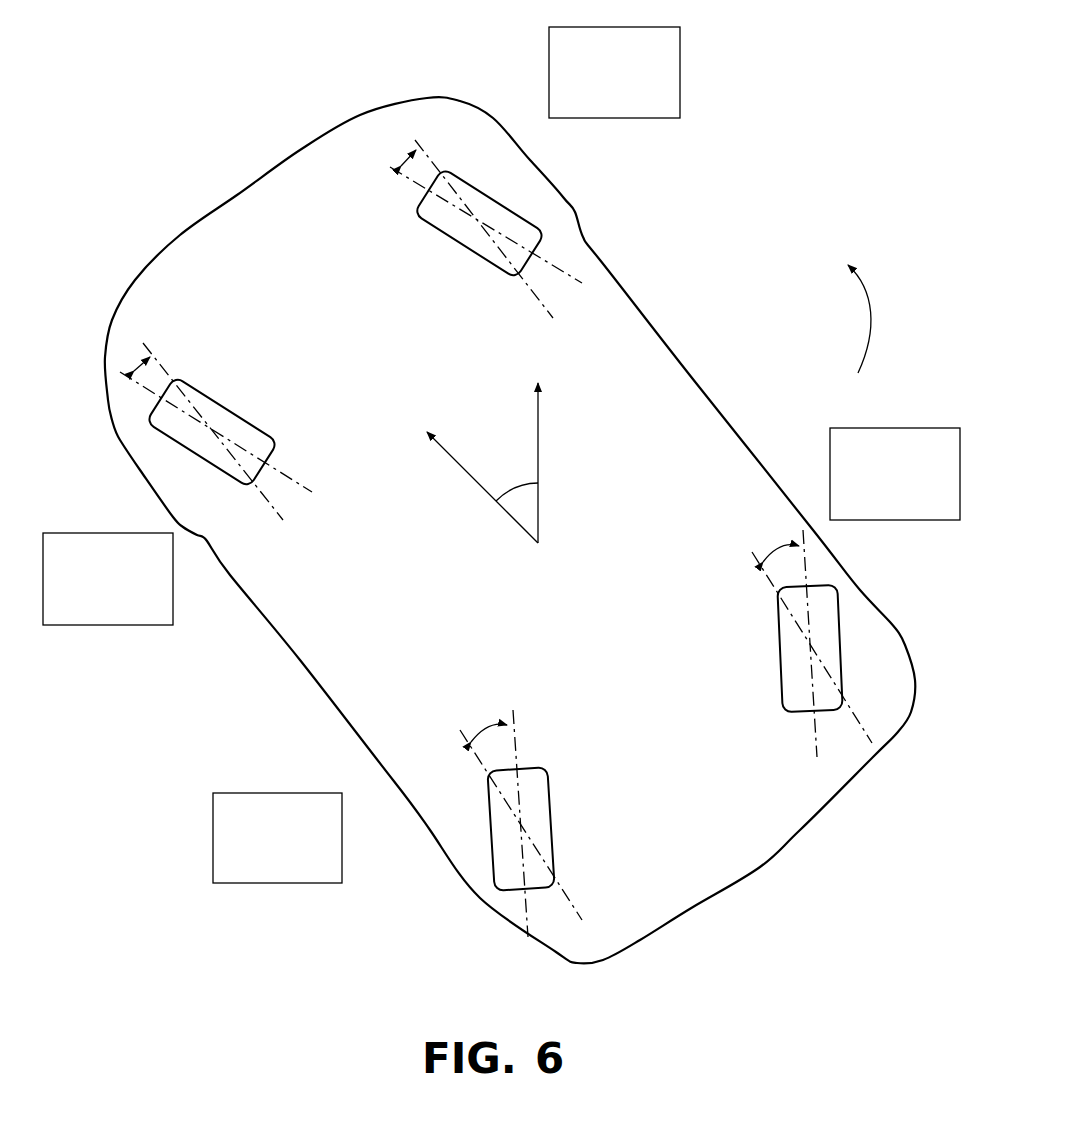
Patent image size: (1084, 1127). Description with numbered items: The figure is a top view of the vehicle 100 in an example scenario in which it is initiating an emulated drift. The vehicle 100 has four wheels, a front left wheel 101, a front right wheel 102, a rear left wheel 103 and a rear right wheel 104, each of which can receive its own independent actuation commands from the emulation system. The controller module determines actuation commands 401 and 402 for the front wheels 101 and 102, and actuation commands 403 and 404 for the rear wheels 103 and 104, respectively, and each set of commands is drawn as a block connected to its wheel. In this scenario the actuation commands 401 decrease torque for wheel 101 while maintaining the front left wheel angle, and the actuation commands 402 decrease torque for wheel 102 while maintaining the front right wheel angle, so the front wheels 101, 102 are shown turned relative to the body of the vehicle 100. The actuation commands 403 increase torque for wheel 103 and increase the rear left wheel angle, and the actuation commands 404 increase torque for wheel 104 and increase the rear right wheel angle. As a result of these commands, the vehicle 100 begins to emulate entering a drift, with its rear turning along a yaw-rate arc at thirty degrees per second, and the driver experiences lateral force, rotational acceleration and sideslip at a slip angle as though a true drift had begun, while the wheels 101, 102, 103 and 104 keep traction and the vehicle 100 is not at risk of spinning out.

The vehicle 100 is at (237, 200).
The front left wheel 101 is at (177, 378).
The front right wheel 102 is at (443, 168).
The rear left wheel 103 is at (522, 768).
The rear right wheel 104 is at (774, 594).
The actuation commands 401 is at (197, 457).
The actuation commands 402 is at (502, 200).
The actuation commands 403 is at (489, 837).
The actuation commands 404 is at (841, 645).